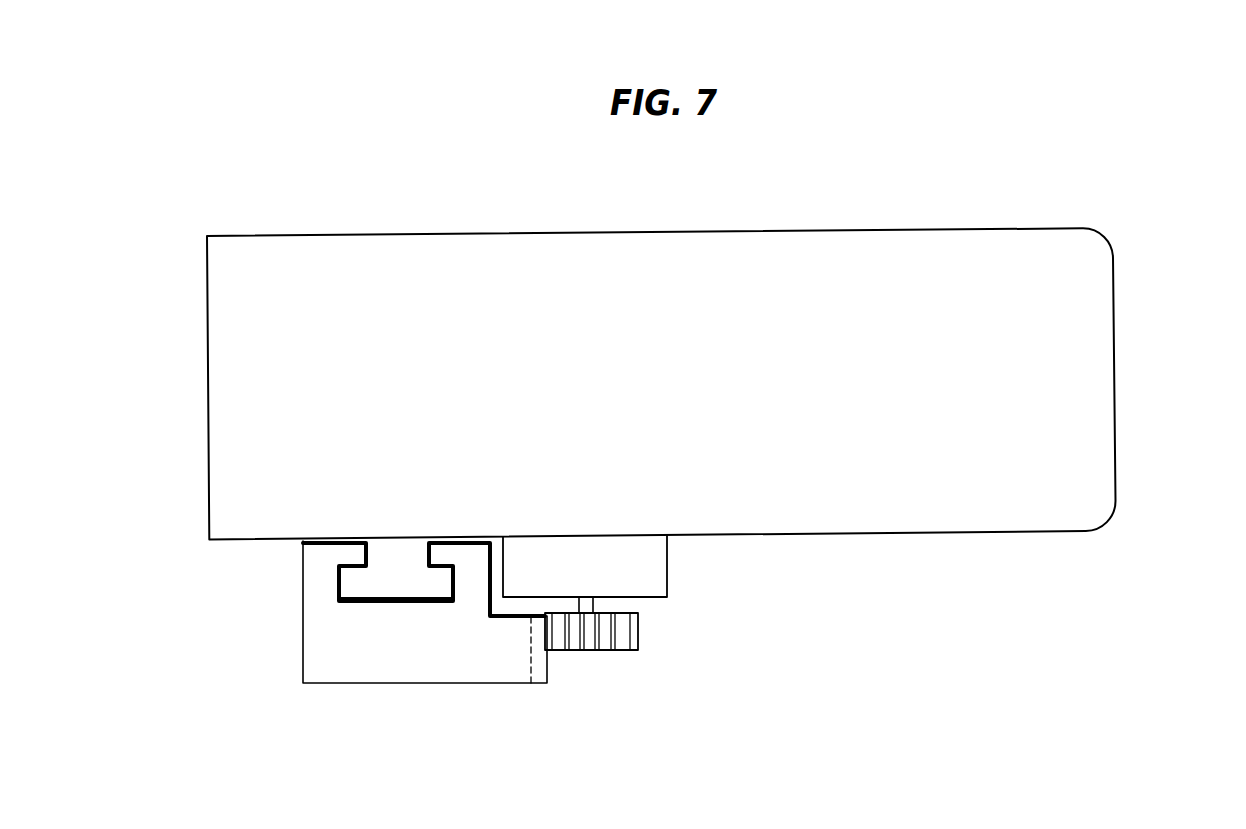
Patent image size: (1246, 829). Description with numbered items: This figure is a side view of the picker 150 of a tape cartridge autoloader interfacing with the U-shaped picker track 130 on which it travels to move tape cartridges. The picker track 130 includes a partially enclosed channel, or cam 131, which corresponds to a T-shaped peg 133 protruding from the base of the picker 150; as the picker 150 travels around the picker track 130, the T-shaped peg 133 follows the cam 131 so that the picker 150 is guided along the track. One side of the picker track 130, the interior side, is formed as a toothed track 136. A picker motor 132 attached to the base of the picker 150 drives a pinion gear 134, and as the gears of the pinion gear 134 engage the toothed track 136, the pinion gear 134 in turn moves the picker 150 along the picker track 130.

The picker 150 is at (1121, 124).
The U-shaped picker track 130 is at (417, 662).
The cam 131 is at (371, 582).
The picker motor 132 is at (647, 580).
The T-shaped peg 133 is at (373, 585).
The pinion gear 134 is at (640, 634).
The toothed track 136 is at (548, 670).